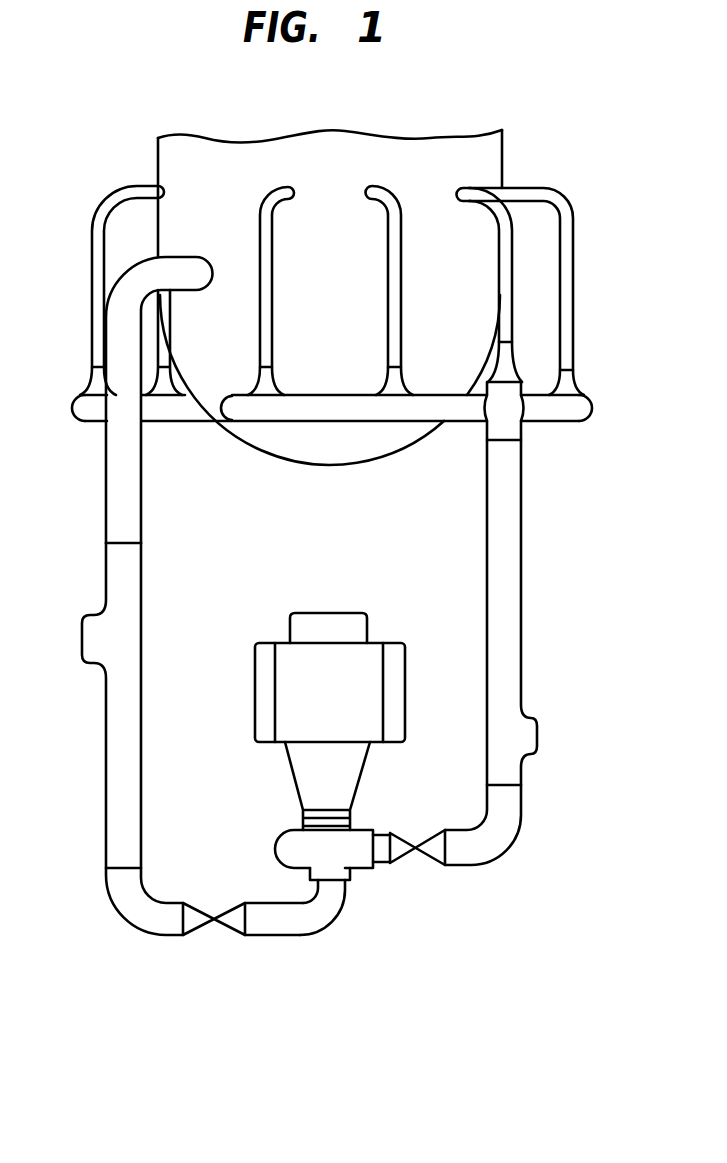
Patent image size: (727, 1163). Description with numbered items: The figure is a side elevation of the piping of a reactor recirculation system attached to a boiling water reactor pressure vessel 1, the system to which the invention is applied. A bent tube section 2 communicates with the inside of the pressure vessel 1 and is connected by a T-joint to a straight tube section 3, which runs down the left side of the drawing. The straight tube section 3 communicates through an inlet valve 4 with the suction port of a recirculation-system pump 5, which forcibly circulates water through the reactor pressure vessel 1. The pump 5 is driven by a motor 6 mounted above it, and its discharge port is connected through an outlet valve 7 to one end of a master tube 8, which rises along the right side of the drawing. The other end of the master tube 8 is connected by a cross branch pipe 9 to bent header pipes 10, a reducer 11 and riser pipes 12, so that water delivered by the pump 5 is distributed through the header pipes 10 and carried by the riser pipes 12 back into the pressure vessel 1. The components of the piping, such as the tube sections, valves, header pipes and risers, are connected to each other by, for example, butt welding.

The pressure vessel 1 is at (485, 164).
The bent tube section 2 is at (118, 478).
The straight tube section 3 is at (112, 712).
The inlet valve 4 is at (213, 922).
The recirculation-system pump 5 is at (283, 836).
The motor 6 is at (265, 677).
The outlet valve 7 is at (418, 847).
The master tube 8 is at (513, 598).
The cross branch pipe 9 is at (512, 430).
The bent header pipes 10 is at (455, 407).
The reducer 11 is at (508, 372).
The riser pipes 12 is at (398, 293).